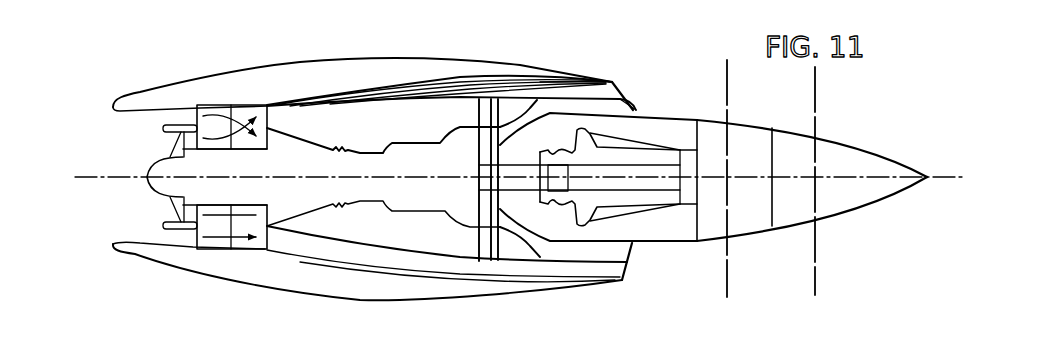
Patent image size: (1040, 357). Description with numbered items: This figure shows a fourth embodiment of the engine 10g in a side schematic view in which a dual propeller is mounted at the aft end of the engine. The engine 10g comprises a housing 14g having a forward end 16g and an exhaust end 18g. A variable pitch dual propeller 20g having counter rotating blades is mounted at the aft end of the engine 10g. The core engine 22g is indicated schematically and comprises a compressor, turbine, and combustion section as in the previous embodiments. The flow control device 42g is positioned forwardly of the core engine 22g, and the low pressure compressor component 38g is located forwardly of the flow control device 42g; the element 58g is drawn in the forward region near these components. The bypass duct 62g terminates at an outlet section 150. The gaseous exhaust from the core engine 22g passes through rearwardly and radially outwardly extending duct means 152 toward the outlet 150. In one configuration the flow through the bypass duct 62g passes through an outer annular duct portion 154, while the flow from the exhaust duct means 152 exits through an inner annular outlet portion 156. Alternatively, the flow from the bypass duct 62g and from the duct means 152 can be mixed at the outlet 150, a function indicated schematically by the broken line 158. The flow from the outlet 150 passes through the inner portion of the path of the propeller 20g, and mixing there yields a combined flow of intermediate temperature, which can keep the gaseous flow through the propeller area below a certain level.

The engine 10g is at (283, 58).
The forward end 16g is at (205, 73).
The housing 14g is at (306, 61).
The bypass duct 62g is at (457, 97).
The core engine 22g is at (398, 130).
The duct means 152 is at (528, 107).
The broken line 158 is at (552, 88).
The outer annular duct portion 154 is at (605, 82).
The outlet section 150 is at (622, 105).
The inner annular outlet portion 156 is at (625, 108).
The exhaust end 18g is at (684, 95).
The variable pitch dual propeller 20g is at (827, 107).
The fan flow mixer 58g is at (175, 117).
The low pressure compressor component 38g is at (160, 207).
The flow control device 42g is at (208, 255).